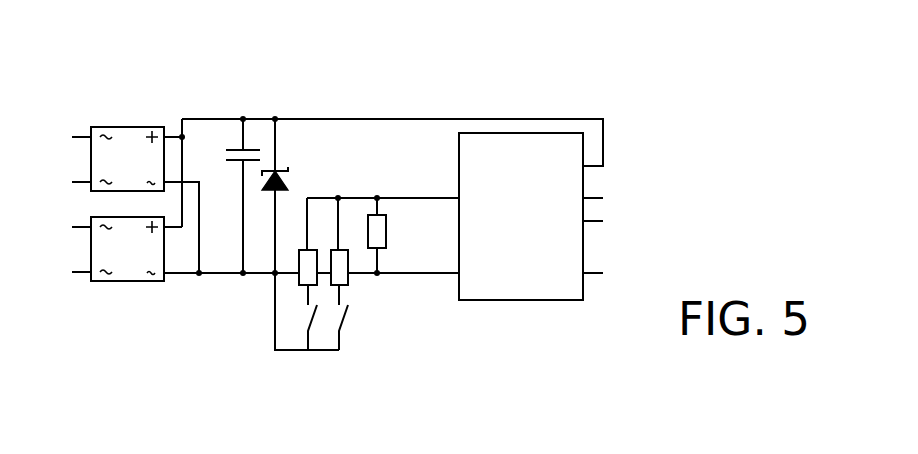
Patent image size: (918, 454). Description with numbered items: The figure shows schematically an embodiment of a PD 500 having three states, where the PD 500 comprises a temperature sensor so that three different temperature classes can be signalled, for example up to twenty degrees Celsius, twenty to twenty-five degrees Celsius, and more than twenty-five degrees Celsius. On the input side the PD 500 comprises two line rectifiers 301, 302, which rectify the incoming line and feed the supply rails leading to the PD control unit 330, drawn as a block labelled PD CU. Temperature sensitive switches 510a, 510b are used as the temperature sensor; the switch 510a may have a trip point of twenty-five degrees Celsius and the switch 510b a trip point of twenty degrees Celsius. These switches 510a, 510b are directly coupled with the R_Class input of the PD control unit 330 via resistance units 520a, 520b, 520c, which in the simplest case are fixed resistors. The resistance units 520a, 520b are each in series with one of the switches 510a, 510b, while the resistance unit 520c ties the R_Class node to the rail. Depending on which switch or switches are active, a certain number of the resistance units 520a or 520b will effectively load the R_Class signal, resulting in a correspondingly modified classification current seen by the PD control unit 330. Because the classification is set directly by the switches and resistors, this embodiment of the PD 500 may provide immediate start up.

The PD 500 is at (583, 87).
The line rectifier 301 is at (118, 127).
The line rectifier 302 is at (118, 281).
The PD control unit 330 is at (517, 301).
The resistance unit 520a is at (299, 277).
The resistance unit 520b is at (346, 280).
The resistance unit 520c is at (384, 230).
The temperature sensitive switch 510a is at (303, 313).
The temperature sensitive switch 510b is at (349, 305).